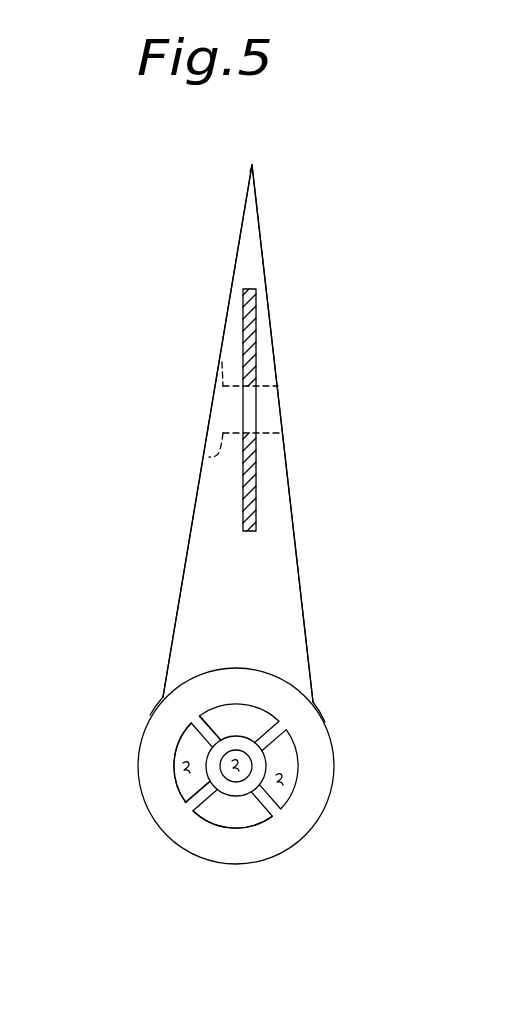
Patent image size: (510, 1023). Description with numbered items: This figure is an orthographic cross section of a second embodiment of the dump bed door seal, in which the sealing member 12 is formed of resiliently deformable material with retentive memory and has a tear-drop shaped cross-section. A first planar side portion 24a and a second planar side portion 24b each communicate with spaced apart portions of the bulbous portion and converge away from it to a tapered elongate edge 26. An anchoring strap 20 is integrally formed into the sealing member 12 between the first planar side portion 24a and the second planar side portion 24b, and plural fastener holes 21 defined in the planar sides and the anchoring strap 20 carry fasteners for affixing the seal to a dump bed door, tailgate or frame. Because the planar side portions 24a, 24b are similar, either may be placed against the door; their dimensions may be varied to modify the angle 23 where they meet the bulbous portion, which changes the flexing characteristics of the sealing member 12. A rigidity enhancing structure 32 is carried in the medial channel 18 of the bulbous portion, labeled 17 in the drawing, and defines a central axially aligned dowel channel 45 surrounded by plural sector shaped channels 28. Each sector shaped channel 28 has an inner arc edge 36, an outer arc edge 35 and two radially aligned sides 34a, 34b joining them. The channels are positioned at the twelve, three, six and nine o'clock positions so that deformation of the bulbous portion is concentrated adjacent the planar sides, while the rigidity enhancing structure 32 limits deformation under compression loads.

The sealing member 12 is at (273, 229).
The tapered elongate edge 26 is at (250, 172).
The anchoring strap 20 is at (250, 313).
The fastener holes 21 is at (225, 408).
The first planar side portion 24a is at (301, 601).
The second planar side portion 24b is at (182, 575).
The angle 23 is at (163, 697).
The medial channel 18 is at (233, 720).
The rigidity enhancing structure 32 is at (248, 710).
The hub 17 is at (283, 832).
The dowel channel 45 is at (237, 770).
The inner arc edge 36 is at (265, 757).
The sector shaped channels 28 is at (185, 772).
The radially aligned side 34a is at (190, 730).
The radially aligned side 34b is at (194, 810).
The outer arc edge 35 is at (175, 753).